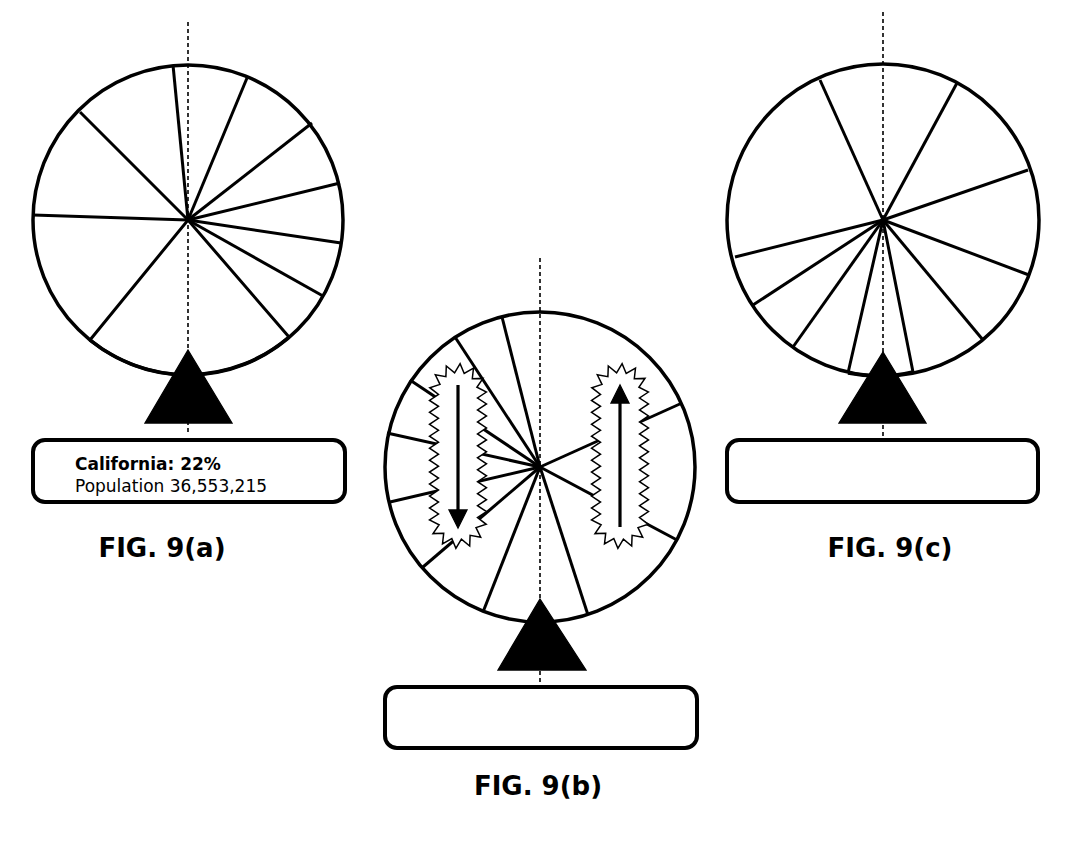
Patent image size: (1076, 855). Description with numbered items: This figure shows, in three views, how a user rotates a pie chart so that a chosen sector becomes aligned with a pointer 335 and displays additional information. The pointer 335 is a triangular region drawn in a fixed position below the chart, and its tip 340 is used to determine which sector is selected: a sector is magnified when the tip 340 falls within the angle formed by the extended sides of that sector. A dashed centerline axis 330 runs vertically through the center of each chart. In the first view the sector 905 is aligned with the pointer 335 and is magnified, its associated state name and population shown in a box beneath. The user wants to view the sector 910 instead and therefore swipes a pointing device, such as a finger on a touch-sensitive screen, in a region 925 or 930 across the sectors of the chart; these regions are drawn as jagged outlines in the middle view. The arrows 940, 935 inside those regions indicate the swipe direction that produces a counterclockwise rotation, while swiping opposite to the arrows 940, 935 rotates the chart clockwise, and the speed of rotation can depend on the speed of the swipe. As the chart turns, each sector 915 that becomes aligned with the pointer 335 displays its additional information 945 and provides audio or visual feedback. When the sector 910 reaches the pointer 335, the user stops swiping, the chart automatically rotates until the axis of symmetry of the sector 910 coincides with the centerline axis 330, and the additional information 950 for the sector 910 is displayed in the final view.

In FIG. 9A, the centerline axis 330 is at (190, 52).
In FIG. 9B, the centerline axis 330 is at (545, 295).
In FIG. 9C, the centerline axis 330 is at (885, 45).
In FIG. 9A, the pointer 335 is at (225, 405).
In FIG. 9B, the pointer 335 is at (570, 645).
In FIG. 9C, the pointer 335 is at (910, 400).
In FIG. 9C, the tip of the pointer 340 is at (887, 355).
In FIG. 9A, the sector 905 is at (160, 365).
In FIG. 9A, the sector 910 is at (310, 145).
In FIG. 9C, the sector 910 is at (865, 360).
In FIG. 9B, the sector 915 is at (517, 603).
In FIG. 9B, the region 925 is at (447, 530).
In FIG. 9B, the region 930 is at (633, 513).
In FIG. 9B, the arrow 935 is at (623, 437).
In FIG. 9B, the arrow 940 is at (452, 405).
In FIG. 9B, the additional information 945 is at (385, 742).
In FIG. 9C, the additional information 950 is at (975, 505).